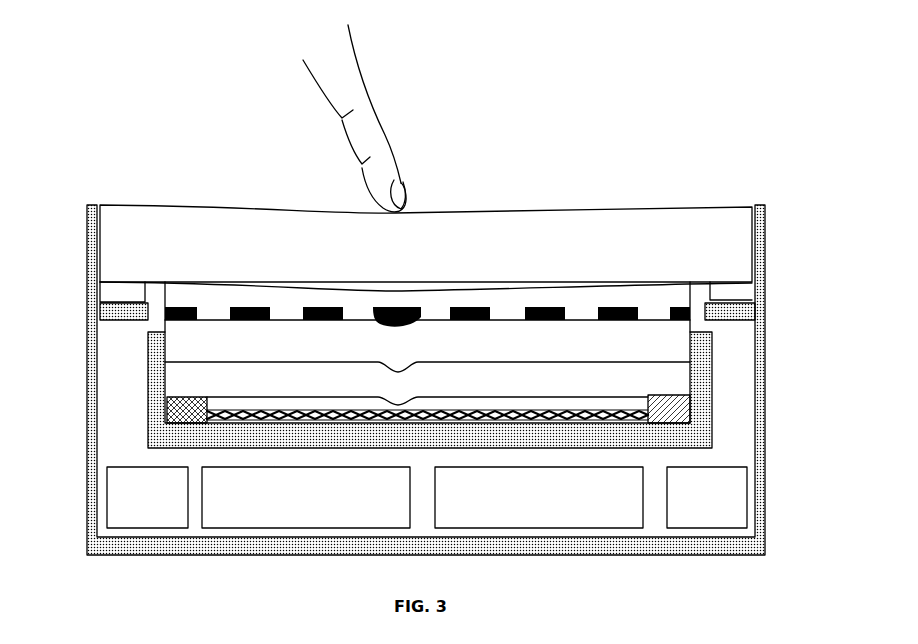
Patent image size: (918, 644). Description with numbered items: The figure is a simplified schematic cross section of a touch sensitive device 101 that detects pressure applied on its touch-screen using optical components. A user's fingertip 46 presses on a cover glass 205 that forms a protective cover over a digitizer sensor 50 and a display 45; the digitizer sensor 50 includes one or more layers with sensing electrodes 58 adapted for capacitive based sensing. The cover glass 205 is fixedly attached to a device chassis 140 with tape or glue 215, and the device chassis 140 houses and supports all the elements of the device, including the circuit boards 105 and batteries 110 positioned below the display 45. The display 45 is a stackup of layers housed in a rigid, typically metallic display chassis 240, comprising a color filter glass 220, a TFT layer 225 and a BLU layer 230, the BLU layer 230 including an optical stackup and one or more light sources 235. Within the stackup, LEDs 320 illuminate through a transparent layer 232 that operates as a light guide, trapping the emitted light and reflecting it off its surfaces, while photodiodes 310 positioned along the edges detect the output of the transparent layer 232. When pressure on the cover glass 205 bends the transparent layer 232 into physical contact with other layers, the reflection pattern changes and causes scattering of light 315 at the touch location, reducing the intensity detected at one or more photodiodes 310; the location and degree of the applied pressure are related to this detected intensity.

The fingertip 46 is at (393, 146).
The touch sensitive device 101 is at (222, 178).
The digitizer sensor 50 is at (212, 305).
The sensing electrodes 58 is at (187, 303).
The cover glass 205 is at (695, 210).
The tape or glue 215 is at (720, 293).
The display 45 is at (728, 343).
The color filter glass 220 is at (195, 347).
The display chassis 240 is at (158, 372).
The TFT layer 225 is at (188, 382).
The LEDs 320 is at (177, 418).
The BLU layer 230 is at (170, 435).
The transparent layer 232 is at (210, 418).
The scattering of light 315 is at (683, 408).
The photodiodes 310 is at (703, 408).
The light sources 235 is at (633, 437).
The circuit boards 105 is at (133, 500).
The device chassis 140 is at (178, 544).
The batteries 110 is at (293, 520).